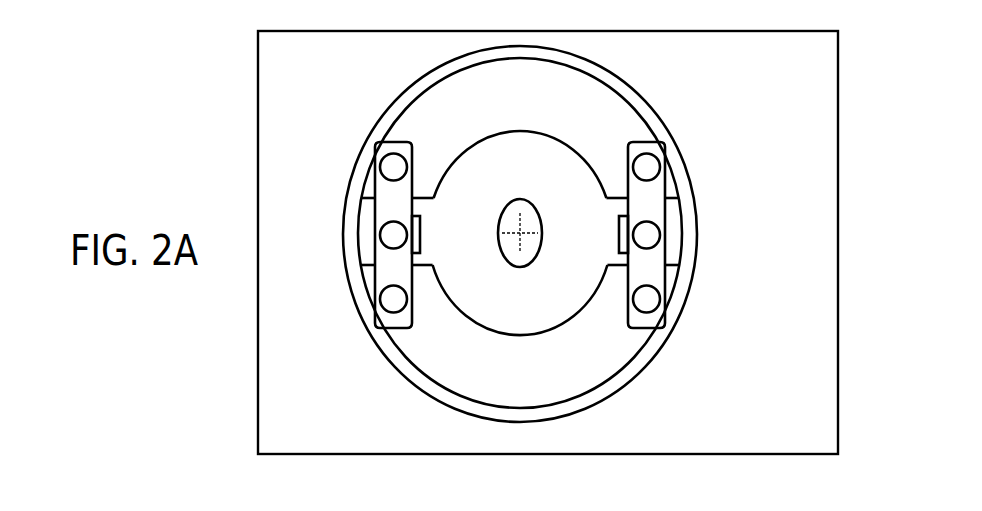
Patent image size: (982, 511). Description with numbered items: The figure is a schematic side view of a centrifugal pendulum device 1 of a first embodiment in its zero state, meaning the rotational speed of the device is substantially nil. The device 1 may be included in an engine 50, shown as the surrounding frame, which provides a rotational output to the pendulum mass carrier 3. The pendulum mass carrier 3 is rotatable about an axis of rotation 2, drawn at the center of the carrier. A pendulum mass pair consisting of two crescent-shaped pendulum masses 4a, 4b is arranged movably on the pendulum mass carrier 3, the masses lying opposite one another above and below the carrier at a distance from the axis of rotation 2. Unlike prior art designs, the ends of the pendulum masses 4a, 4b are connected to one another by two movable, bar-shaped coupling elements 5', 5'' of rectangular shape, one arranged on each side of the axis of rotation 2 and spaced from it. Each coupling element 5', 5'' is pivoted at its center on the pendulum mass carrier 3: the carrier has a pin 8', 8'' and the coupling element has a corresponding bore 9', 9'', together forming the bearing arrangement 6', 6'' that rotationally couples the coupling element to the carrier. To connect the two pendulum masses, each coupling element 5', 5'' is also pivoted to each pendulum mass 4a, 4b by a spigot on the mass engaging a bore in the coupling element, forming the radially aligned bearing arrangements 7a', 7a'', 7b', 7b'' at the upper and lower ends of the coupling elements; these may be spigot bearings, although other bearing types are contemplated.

The engine 50 is at (281, 31).
The centrifugal pendulum device 1 is at (742, 105).
The axis of rotation 2 is at (521, 235).
The pendulum mass carrier 3 is at (481, 189).
The pendulum mass 4a is at (503, 113).
The pendulum mass 4b is at (452, 376).
The coupling element 5' is at (342, 239).
The coupling element 5'' is at (707, 247).
The bearing arrangement 6' is at (447, 231).
The bearing arrangement 6'' is at (591, 231).
The bearing arrangement 7a' is at (365, 161).
The bearing arrangement 7a'' is at (682, 156).
The bearing arrangement 7b' is at (352, 301).
The bearing arrangement 7b'' is at (692, 295).
The pin 8' is at (363, 232).
The pin 8'' is at (686, 240).
The bore 9' is at (355, 206).
The bore 9'' is at (693, 225).